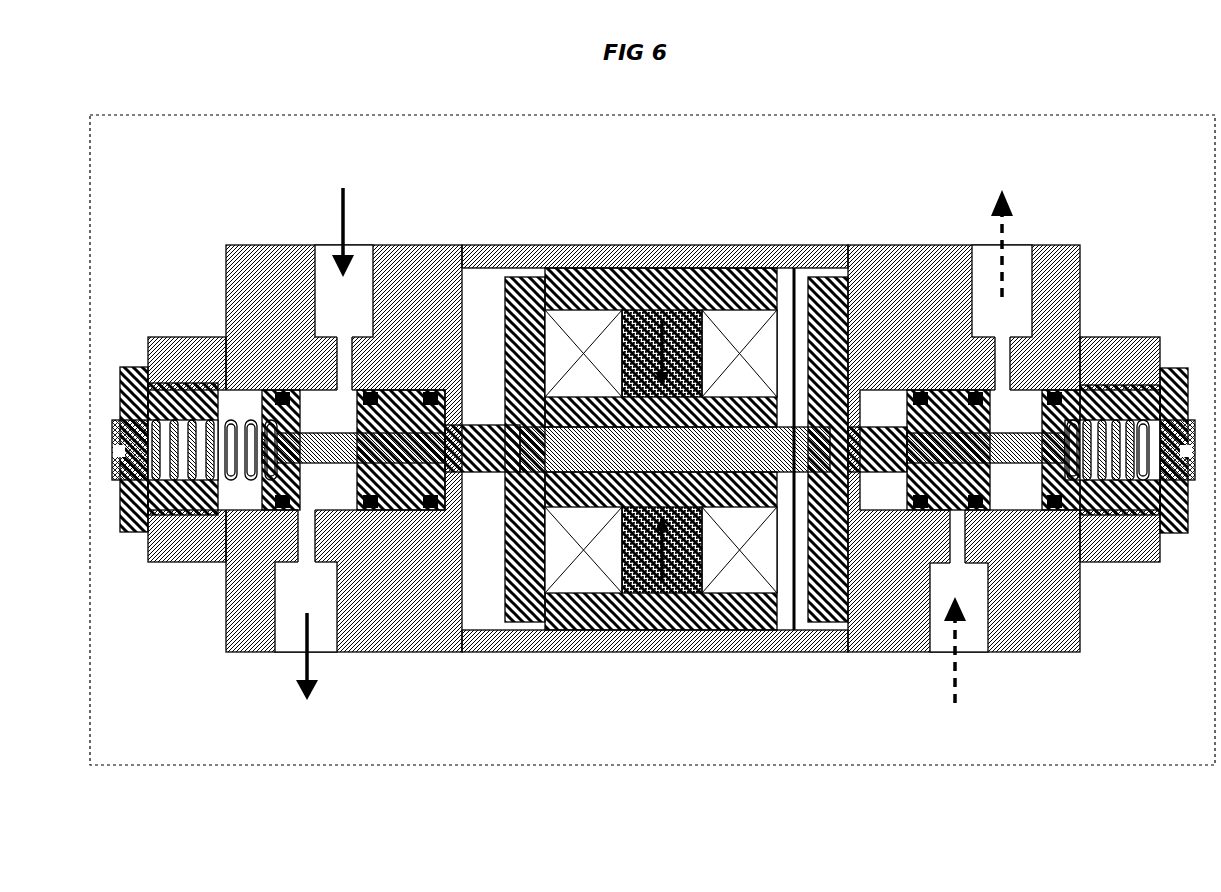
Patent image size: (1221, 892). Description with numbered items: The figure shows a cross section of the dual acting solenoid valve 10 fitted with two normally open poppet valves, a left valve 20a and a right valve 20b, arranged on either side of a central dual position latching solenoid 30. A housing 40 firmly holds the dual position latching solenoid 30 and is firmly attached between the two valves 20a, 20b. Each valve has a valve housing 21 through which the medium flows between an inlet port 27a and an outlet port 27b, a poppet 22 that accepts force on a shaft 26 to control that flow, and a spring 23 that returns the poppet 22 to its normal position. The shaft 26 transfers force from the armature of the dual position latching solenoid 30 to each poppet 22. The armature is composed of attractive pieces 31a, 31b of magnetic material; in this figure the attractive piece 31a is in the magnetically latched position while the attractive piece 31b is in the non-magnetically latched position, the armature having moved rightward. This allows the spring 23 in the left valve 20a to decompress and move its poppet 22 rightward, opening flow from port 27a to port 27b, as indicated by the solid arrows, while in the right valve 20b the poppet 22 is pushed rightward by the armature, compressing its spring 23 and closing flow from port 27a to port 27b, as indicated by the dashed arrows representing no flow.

The dual acting solenoid valve 10 is at (250, 115).
The left valve 20a is at (245, 245).
The right valve 20b is at (1052, 247).
The valve housing 21 is at (243, 298).
The poppet 22 is at (333, 455).
The spring 23 is at (190, 455).
The shaft 26 is at (480, 455).
The inlet port 27a is at (366, 270).
The outlet port 27b is at (992, 275).
The dual position latching solenoid 30 is at (660, 290).
The first attractive piece 31a is at (523, 300).
The second attractive piece 31b is at (830, 300).
The housing 40 is at (583, 255).